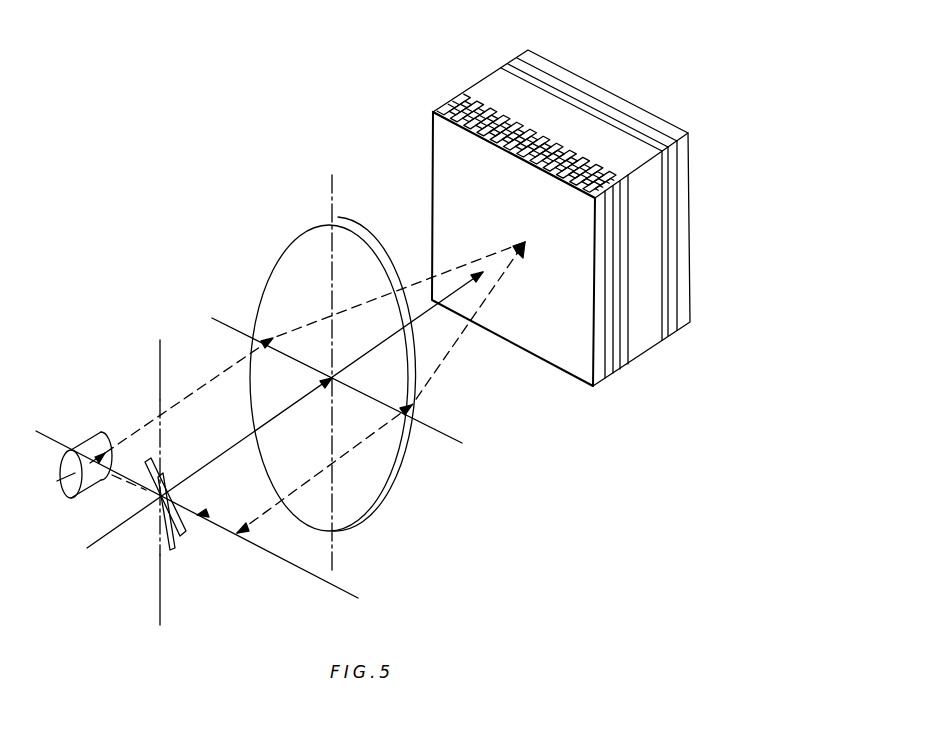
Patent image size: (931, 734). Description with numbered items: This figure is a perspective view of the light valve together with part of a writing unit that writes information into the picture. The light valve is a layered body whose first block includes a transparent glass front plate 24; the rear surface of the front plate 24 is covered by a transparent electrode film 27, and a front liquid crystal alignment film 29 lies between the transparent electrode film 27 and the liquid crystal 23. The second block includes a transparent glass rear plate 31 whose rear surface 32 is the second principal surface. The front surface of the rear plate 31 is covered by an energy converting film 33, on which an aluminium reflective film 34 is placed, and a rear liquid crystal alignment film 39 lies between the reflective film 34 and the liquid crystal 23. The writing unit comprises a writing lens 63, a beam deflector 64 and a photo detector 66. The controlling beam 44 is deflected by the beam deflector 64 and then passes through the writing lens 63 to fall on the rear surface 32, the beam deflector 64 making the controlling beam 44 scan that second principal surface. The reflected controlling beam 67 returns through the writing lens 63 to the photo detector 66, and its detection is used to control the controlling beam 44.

The liquid crystal 23 is at (576, 118).
The front plate 24 is at (527, 50).
The transparent electrode film 27 is at (512, 62).
The front liquid crystal alignment film 29 is at (500, 68).
The rear plate 31 is at (433, 112).
The rear surface 32 is at (565, 350).
The energy converting film 33 is at (435, 108).
The reflective film 34 is at (445, 100).
The rear liquid crystal alignment film 39 is at (462, 92).
The controlling beam 44 is at (432, 308).
The writing lens 63 is at (319, 219).
The beam deflector 64 is at (155, 505).
The photo detector 66 is at (88, 443).
The reflected controlling beam 67 is at (142, 424).